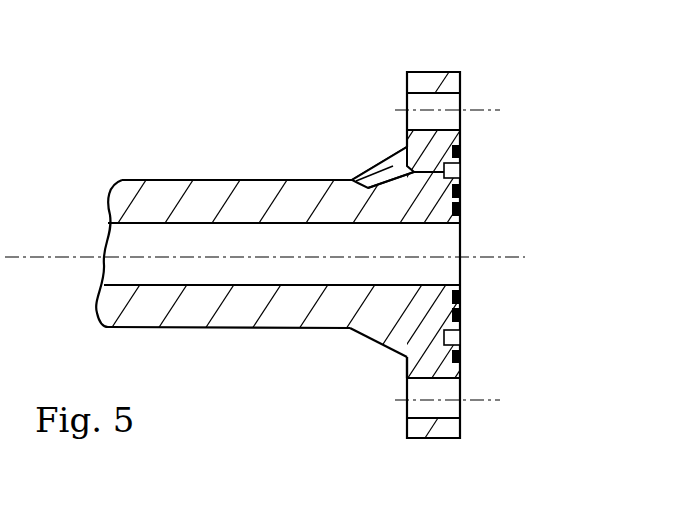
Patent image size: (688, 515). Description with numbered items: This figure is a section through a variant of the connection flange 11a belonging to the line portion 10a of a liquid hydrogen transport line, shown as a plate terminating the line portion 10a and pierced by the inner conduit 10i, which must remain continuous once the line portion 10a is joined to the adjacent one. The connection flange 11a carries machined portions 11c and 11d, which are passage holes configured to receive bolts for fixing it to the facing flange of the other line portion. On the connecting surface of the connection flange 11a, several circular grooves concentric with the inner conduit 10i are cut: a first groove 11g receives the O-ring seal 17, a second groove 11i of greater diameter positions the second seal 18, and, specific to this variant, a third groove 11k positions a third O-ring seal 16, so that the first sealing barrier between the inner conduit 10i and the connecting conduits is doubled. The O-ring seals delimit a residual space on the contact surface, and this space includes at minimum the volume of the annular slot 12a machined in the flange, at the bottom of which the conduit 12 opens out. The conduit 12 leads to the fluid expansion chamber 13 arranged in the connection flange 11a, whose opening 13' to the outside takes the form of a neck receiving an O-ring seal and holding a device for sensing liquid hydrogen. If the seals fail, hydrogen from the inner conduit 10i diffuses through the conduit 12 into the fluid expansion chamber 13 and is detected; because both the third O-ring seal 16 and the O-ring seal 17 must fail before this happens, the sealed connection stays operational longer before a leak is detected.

The line portion 10a is at (170, 172).
The inner conduit 10i is at (132, 238).
The connection flange 11a is at (418, 72).
The machined portion 11c is at (462, 430).
The machined portion 11d is at (448, 103).
The first groove 11g is at (448, 322).
The second groove 11i is at (458, 358).
The third groove 11k is at (458, 253).
The conduit 12 is at (438, 172).
The annular slot 12a is at (462, 170).
The fluid expansion chamber 13 is at (343, 148).
The opening 13' is at (321, 161).
The third O-ring seal 16 is at (462, 298).
The O-ring seal 17 is at (455, 190).
The second seal 18 is at (453, 151).